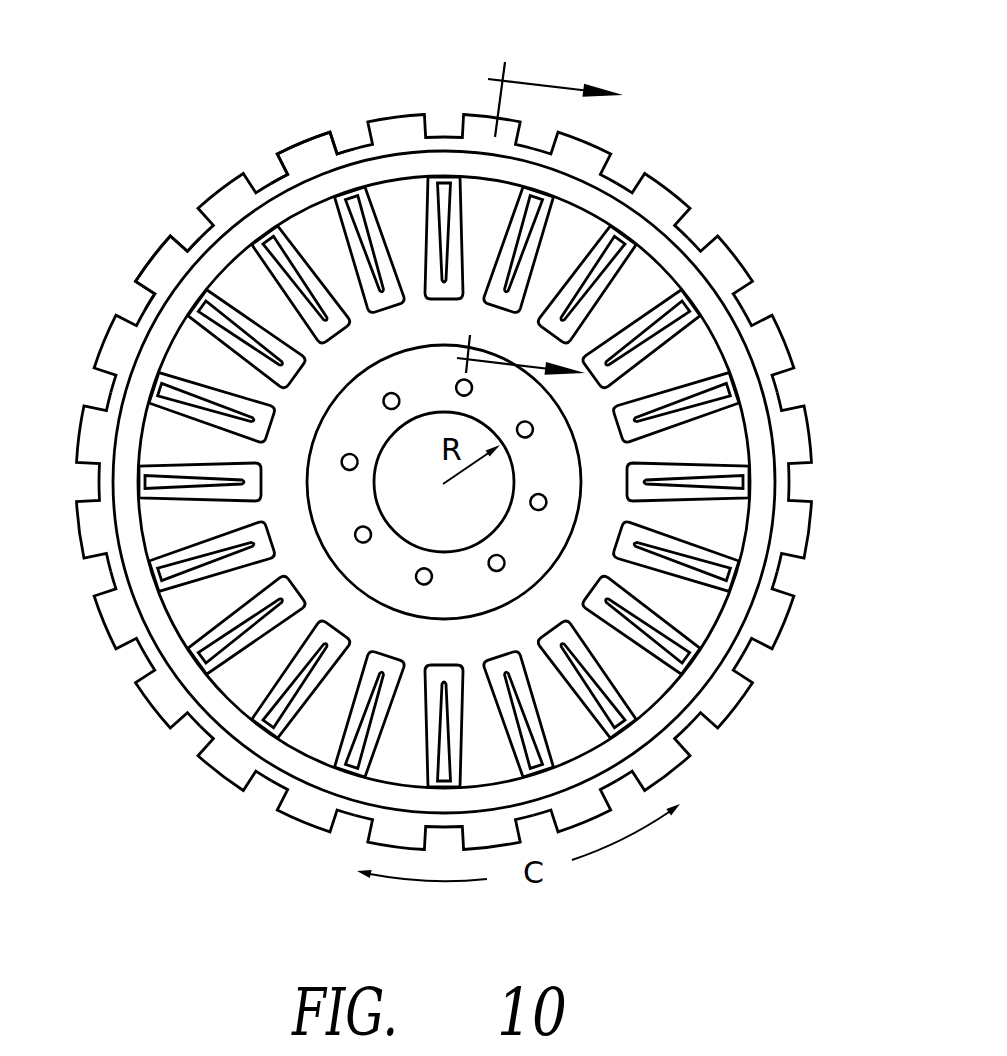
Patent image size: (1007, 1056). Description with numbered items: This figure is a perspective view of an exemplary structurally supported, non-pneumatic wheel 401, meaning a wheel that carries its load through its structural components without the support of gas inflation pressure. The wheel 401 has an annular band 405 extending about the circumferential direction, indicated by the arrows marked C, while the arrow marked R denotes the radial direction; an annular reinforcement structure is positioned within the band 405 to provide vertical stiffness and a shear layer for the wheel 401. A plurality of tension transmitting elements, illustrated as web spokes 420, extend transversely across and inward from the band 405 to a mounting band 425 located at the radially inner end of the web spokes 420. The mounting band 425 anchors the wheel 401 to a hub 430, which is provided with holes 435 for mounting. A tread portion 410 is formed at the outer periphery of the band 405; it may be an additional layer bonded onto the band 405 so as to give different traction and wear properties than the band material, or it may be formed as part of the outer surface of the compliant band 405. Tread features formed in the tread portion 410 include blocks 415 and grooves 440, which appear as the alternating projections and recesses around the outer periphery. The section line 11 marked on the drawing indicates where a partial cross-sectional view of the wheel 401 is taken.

The structurally supported wheel 401 is at (192, 112).
The annular band 405 is at (703, 302).
The tread portion 410 is at (790, 438).
The blocks 415 is at (298, 136).
The web spokes 420 is at (173, 417).
The mounting band 425 is at (320, 572).
The hub 430 is at (545, 527).
The holes 435 is at (505, 559).
The grooves 440 is at (182, 223).
The section line 11- 11 is at (540, 228).